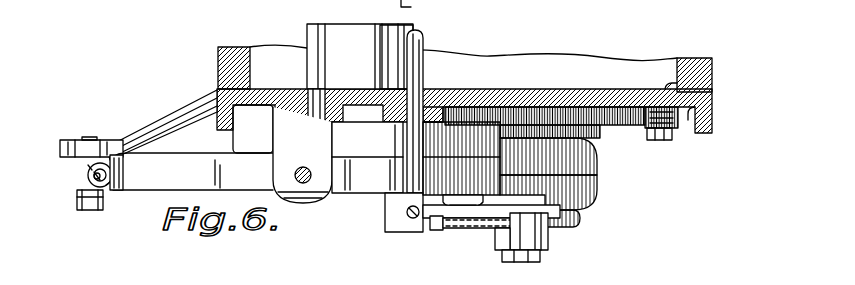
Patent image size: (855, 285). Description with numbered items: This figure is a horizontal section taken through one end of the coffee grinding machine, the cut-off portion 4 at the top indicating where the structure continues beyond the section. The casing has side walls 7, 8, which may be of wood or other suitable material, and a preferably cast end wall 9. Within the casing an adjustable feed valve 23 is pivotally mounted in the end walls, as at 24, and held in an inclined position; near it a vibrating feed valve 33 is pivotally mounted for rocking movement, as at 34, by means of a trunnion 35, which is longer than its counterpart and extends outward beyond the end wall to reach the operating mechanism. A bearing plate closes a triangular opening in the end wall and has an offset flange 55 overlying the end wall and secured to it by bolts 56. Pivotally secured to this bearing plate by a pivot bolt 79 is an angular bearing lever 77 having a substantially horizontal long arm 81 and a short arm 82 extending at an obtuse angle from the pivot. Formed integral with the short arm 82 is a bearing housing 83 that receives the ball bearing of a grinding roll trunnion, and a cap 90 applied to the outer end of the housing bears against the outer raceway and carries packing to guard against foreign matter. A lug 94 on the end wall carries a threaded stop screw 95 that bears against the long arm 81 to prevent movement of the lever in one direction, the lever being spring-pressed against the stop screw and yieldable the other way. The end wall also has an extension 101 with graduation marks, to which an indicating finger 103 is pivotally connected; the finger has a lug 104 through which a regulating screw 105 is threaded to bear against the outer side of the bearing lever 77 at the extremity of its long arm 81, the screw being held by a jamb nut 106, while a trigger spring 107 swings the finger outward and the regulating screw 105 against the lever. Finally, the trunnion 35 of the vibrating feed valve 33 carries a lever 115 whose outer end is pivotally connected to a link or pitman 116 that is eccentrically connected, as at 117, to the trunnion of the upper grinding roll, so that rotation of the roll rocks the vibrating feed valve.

The frame 4 is at (417, 10).
The side wall 7 is at (229, 63).
The side wall 8 is at (712, 72).
The end wall 9 is at (550, 93).
The adjustable feed valve 23 is at (355, 31).
The pivot of adjustable feed valve 24 is at (278, 115).
The vibrating feed valve 33 is at (399, 43).
The pivot of vibrating feed valve 34 is at (429, 100).
The trunnion 35 is at (416, 137).
The offset flange 55 is at (595, 112).
The bolt 56 is at (665, 130).
The bearing lever 77 is at (364, 189).
The pivot bolt 79 is at (467, 200).
The long arm 81 is at (214, 160).
The short arm 82 is at (599, 175).
The bearing housing 83 is at (599, 154).
The cap 90 is at (579, 219).
The lug 94 is at (282, 168).
The stop screw 95 is at (306, 184).
The extension 101 is at (148, 131).
The indicating finger 103 is at (72, 177).
The lug 104 is at (137, 170).
The regulating screw 105 is at (92, 178).
The jamb nut 106 is at (120, 186).
The trigger spring 107 is at (80, 195).
The lever 115 is at (491, 223).
The link or pitman 116 is at (548, 243).
The eccentric connection 117 is at (507, 262).